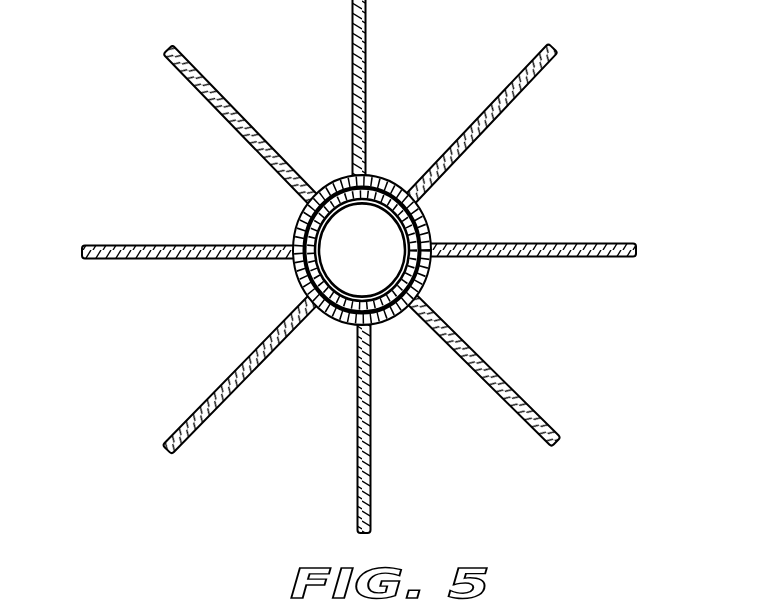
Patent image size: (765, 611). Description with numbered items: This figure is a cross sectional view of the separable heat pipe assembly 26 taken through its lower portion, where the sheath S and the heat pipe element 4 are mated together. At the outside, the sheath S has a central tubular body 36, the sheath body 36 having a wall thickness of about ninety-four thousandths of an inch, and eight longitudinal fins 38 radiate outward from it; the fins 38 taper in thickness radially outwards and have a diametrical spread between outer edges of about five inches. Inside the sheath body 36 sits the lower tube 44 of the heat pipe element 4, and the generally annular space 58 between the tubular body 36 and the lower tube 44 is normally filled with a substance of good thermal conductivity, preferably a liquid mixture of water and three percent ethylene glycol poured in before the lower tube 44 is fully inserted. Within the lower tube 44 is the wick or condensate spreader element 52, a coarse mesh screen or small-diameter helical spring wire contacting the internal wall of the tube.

The separable heat pipe assembly 26 is at (103, 110).
The sheath S is at (83, 253).
The longitudinal fins 38 is at (206, 399).
The hub 4 is at (287, 275).
The lower tube 44 is at (432, 211).
The sheath body 36 is at (428, 283).
The annular space 58 is at (310, 217).
The wick or condensate spreader element 52 is at (357, 201).